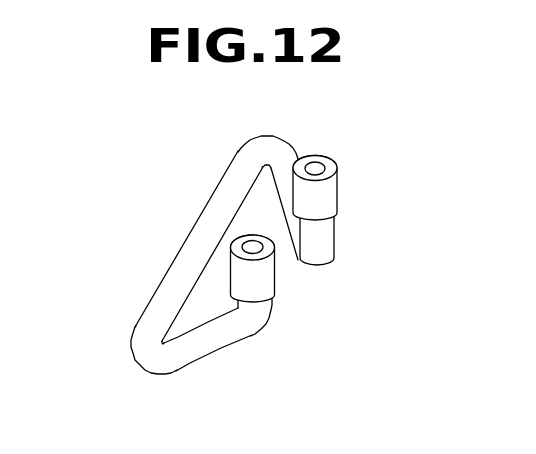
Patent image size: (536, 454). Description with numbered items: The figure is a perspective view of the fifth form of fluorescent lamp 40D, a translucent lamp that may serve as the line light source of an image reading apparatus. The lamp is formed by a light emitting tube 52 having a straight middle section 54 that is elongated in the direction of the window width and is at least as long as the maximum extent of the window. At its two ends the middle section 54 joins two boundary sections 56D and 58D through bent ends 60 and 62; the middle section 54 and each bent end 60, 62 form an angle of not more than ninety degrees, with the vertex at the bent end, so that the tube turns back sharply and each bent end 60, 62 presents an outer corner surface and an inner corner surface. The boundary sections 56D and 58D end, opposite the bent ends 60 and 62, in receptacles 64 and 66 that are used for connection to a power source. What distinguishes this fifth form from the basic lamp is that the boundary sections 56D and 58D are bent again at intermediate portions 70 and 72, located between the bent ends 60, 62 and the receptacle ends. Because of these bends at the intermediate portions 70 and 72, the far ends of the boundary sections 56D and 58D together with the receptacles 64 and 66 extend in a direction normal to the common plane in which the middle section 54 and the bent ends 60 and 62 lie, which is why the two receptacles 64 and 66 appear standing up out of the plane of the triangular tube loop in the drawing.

The fluorescent lamp 40D is at (256, 265).
The light emitting tube 52 is at (256, 265).
The straight middle section 54 is at (211, 202).
The boundary section 56D is at (212, 361).
The boundary section 58D is at (300, 148).
The bent end 60 is at (137, 362).
The bent end 62 is at (292, 138).
The receptacle 64 is at (277, 280).
The receptacle 66 is at (337, 176).
The intermediate portion 70 is at (261, 330).
The intermediate portion 72 is at (335, 240).